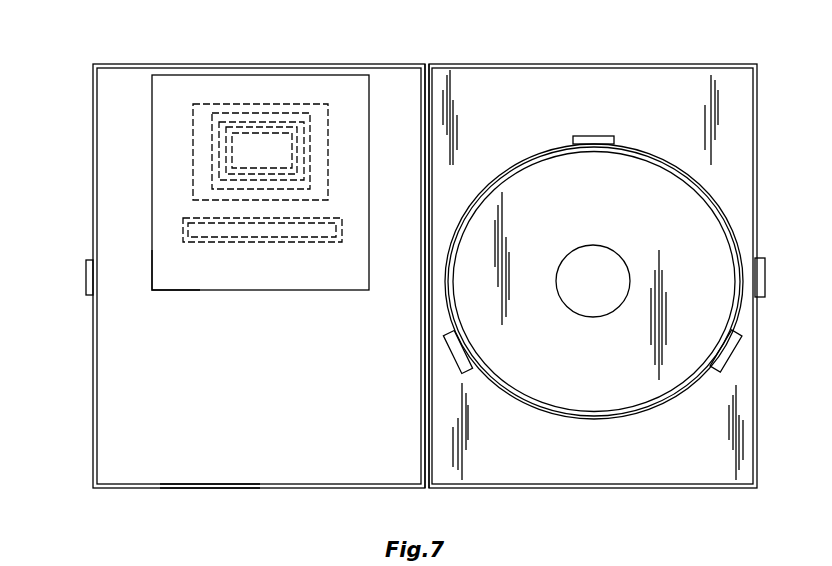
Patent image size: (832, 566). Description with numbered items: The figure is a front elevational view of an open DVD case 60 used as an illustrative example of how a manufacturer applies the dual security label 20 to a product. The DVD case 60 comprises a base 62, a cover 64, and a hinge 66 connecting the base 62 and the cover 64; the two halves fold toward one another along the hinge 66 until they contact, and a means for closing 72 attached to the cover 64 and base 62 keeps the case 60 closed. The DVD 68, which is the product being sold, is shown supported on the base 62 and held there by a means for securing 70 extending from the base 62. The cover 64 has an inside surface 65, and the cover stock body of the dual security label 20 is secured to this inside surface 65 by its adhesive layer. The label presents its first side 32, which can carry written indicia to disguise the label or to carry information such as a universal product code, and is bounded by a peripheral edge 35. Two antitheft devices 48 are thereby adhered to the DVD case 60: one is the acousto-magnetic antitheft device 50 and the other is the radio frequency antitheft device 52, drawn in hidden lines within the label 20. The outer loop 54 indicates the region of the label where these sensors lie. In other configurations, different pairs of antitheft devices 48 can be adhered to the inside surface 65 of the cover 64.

The dual security label 20 is at (297, 87).
The first side 32 is at (360, 105).
The peripheral edge 35 is at (152, 290).
The antitheft devices 48 is at (203, 218).
The acousto-magnetic antitheft device 50 is at (238, 240).
The radio frequency antitheft device 52 is at (215, 142).
The antenna outer loop 54 is at (235, 113).
The DVD case 60 is at (523, 82).
The base 62 is at (631, 465).
The cover 64 is at (208, 463).
The inside surface 65 is at (167, 460).
The hinge 66 is at (425, 434).
The DVD 68 is at (693, 245).
The means for securing 70 is at (592, 140).
The means for closing 72 is at (87, 278).